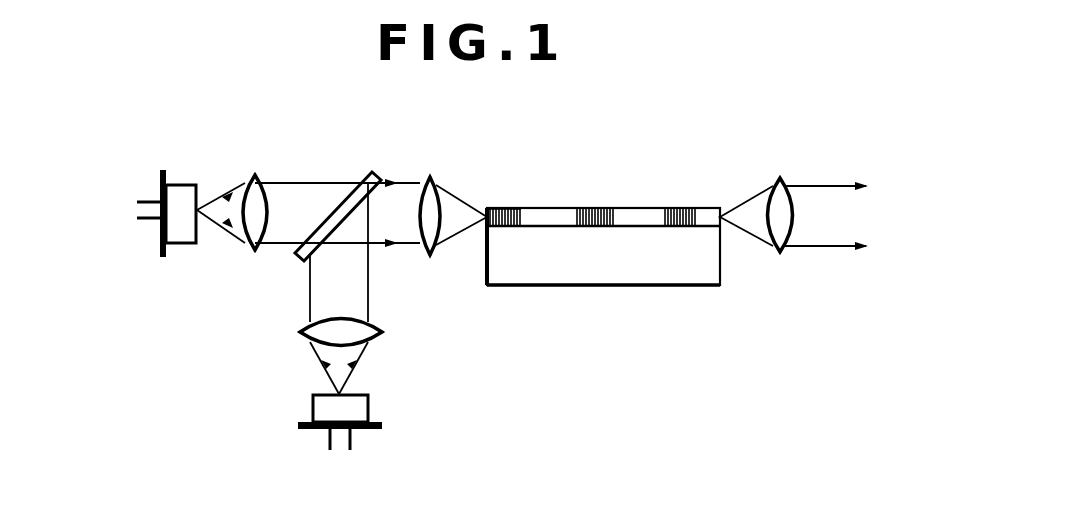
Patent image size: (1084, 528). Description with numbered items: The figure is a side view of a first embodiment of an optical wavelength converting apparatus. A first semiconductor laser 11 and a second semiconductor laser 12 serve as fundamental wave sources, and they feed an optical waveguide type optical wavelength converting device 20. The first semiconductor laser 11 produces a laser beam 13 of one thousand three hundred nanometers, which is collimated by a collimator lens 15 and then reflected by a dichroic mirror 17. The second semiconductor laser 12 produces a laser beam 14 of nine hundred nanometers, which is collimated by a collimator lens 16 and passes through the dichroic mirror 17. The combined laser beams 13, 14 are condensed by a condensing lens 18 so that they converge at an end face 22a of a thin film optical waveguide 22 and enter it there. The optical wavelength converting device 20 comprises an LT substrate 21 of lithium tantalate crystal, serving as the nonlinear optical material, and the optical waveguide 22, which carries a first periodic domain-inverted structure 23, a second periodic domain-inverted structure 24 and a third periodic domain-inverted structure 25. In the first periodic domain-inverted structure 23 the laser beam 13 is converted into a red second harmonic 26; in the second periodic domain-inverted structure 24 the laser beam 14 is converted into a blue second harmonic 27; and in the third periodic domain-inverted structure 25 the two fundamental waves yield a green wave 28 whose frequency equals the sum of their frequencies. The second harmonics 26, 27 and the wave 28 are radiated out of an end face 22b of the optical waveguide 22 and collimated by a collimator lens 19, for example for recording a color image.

The first semiconductor laser 11 is at (362, 408).
The second semiconductor laser 12 is at (186, 184).
The laser beam 13 is at (318, 353).
The laser beam 14 is at (241, 187).
The collimator lens 15 is at (328, 320).
The collimator lens 16 is at (265, 182).
The dichroic mirror 17 is at (343, 192).
The condensing lens 18 is at (418, 203).
The collimator lens 19 is at (797, 199).
The optical wavelength converting device 20 is at (617, 256).
The LT substrate 21 is at (594, 265).
The optical waveguide 22 is at (640, 217).
The end face 22a is at (480, 203).
The end face 22b is at (737, 210).
The first periodic domain-inverted structure 23 is at (510, 205).
The second periodic domain-inverted structure 24 is at (597, 210).
The third periodic domain-inverted structure 25 is at (684, 212).
The second harmonic 26 is at (752, 238).
The second harmonic 27 is at (746, 231).
The sum-frequency wave 28 is at (826, 216).